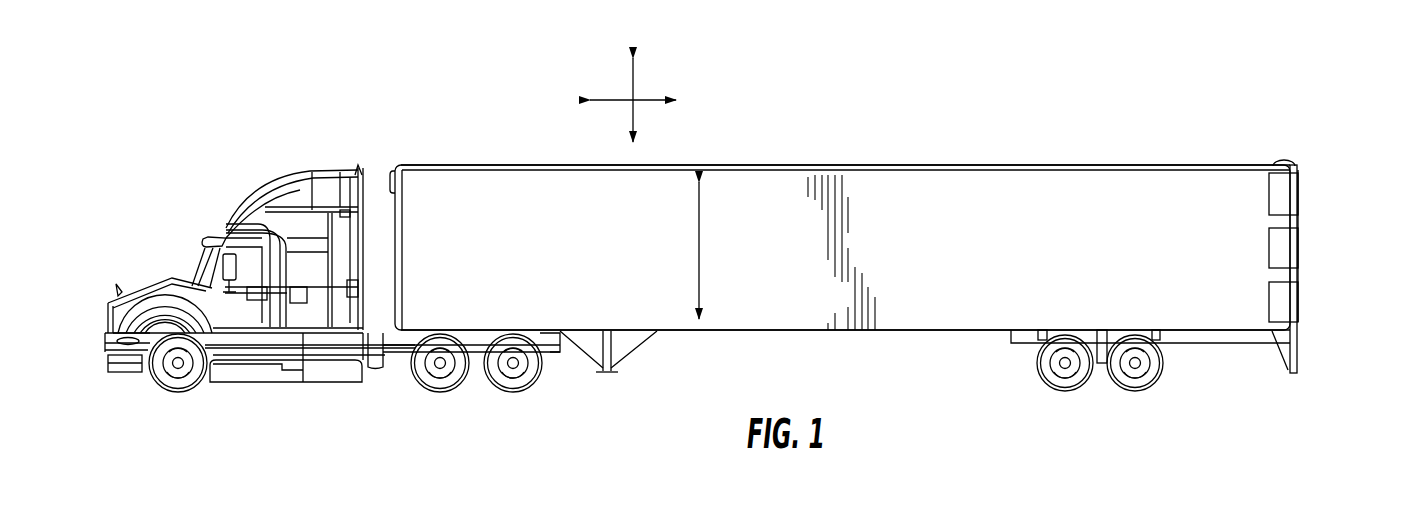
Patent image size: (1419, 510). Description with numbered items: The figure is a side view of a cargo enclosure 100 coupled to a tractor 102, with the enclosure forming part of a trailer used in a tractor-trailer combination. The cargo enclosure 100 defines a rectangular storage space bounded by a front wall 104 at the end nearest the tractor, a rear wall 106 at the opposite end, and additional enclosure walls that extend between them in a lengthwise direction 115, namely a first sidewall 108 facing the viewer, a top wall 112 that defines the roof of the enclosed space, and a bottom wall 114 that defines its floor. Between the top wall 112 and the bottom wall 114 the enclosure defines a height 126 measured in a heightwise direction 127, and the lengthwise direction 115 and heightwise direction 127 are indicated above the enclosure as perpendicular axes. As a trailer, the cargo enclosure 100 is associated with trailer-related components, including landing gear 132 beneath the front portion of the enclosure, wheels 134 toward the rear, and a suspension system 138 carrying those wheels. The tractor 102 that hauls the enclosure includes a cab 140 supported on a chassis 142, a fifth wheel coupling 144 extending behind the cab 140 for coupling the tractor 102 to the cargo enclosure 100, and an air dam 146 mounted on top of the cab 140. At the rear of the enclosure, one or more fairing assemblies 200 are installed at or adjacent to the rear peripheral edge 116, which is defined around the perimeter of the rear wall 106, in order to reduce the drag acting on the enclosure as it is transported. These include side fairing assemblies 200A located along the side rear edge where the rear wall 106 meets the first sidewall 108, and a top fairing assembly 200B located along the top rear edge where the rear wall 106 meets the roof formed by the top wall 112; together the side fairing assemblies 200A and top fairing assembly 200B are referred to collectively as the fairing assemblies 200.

The cargo enclosure 100 is at (1136, 98).
The tractor 102 is at (192, 171).
The front wall 104 is at (395, 288).
The rear wall 106 is at (1222, 205).
The first sidewall 108 is at (931, 303).
The top wall 112 is at (884, 164).
The bottom wall 114 is at (780, 331).
The lengthwise direction 115 is at (615, 98).
The rear peripheral edge 116 is at (1298, 168).
The height 126 is at (698, 252).
The heightwise direction 127 is at (633, 83).
The landing gear 132 is at (632, 350).
The wheels 134 is at (1127, 391).
The suspension system 138 is at (1128, 357).
The cab 140 is at (208, 240).
The chassis 142 is at (223, 387).
The fifth wheel coupling 144 is at (472, 340).
The air dam 146 is at (298, 187).
The fairing assemblies 200 is at (1202, 205).
The side fairing assemblies 200A is at (1277, 300).
The top fairing assemblies 200B is at (1284, 160).